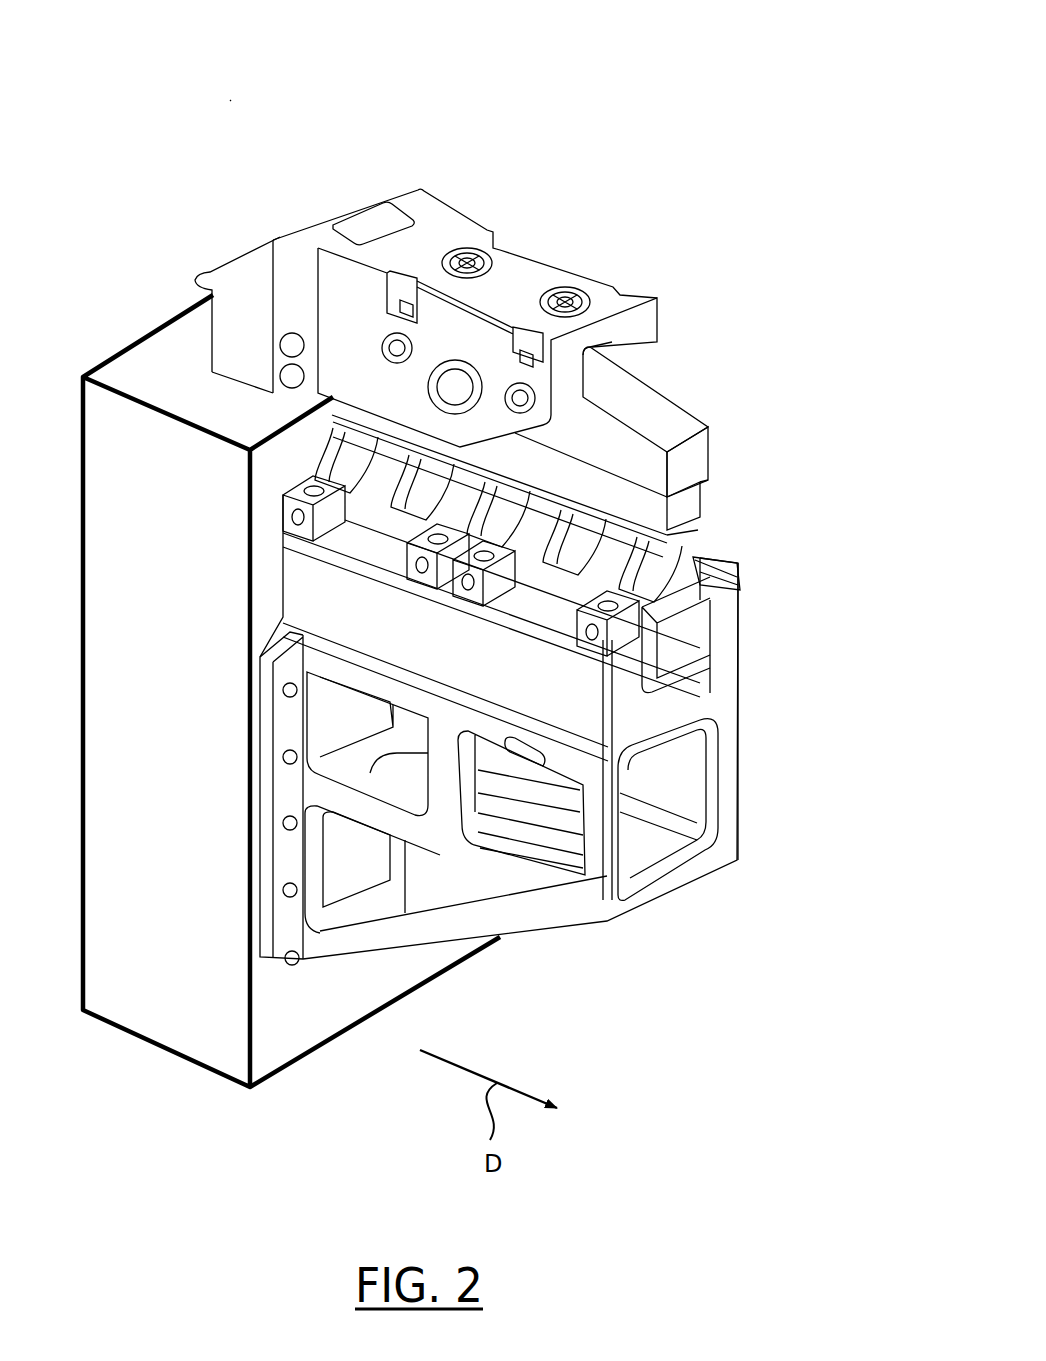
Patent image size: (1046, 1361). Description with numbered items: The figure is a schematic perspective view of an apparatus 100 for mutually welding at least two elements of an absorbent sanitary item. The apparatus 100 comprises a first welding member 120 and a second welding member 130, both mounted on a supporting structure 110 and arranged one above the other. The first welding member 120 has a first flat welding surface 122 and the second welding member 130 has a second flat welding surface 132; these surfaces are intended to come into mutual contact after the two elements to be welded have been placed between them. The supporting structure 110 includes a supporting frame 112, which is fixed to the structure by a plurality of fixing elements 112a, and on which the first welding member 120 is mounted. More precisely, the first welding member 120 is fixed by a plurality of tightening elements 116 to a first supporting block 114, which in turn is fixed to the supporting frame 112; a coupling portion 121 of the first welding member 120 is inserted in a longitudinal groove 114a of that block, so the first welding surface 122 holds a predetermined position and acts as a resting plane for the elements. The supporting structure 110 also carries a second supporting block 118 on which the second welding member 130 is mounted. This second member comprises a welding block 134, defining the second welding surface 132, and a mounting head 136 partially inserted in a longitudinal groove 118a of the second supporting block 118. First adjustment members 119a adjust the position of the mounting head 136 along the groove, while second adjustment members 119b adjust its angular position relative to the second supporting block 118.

The apparatus 100 is at (228, 97).
The supporting structure 110 is at (82, 583).
The supporting frame 112 is at (683, 878).
The fixing elements 112a is at (293, 962).
The first supporting block 114 is at (689, 697).
The longitudinal groove 114a is at (706, 672).
The tightening elements 116 is at (326, 530).
The second supporting block 118 is at (528, 277).
The longitudinal groove 118a is at (628, 352).
The first adjustment members 119a is at (566, 403).
The second adjustment members 119b is at (410, 384).
The first welding member 120 is at (689, 592).
The coupling portion 121 is at (693, 632).
The first flat welding surface 122 is at (680, 530).
The second welding member 130 is at (729, 430).
The second flat welding surface 132 is at (683, 530).
The welding block 134 is at (693, 500).
The mounting head 136 is at (667, 402).